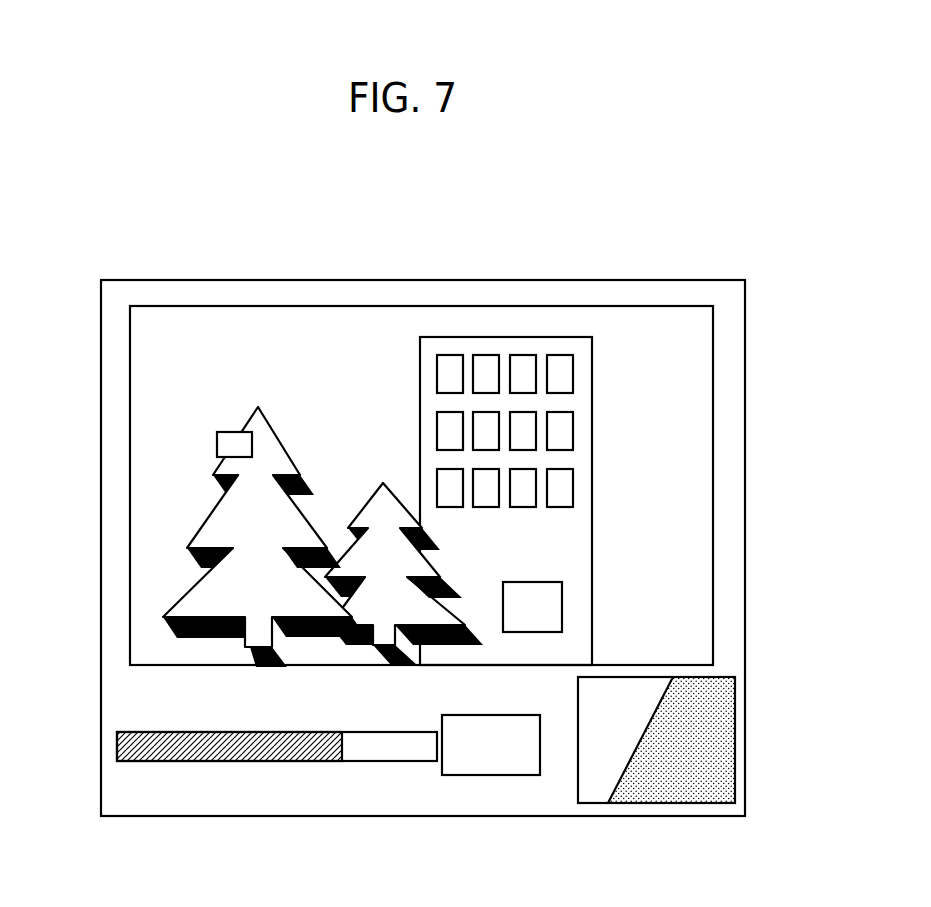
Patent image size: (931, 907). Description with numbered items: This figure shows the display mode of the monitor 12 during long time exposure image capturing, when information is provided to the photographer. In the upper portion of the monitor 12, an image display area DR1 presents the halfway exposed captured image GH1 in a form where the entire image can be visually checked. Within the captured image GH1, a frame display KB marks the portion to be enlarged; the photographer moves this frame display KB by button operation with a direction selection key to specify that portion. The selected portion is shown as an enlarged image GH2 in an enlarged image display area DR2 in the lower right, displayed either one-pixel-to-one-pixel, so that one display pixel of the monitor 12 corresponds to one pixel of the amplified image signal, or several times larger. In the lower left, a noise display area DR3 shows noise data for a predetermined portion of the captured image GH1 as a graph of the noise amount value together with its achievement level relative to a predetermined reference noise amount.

The monitor 12 is at (745, 543).
The image display area DR1 is at (276, 298).
The halfway exposed captured image GH1 is at (648, 306).
The frame display KB is at (217, 447).
The enlarged image display area DR2 is at (748, 710).
The enlarged image GH2 is at (678, 792).
The noise display area DR3 is at (244, 774).